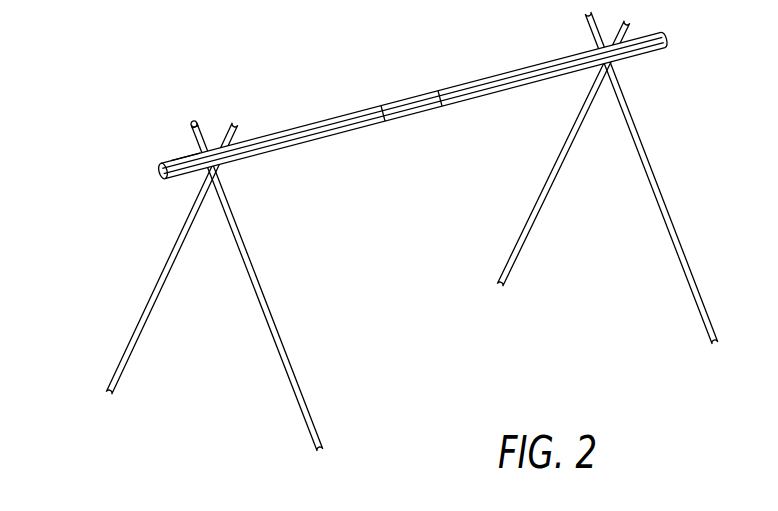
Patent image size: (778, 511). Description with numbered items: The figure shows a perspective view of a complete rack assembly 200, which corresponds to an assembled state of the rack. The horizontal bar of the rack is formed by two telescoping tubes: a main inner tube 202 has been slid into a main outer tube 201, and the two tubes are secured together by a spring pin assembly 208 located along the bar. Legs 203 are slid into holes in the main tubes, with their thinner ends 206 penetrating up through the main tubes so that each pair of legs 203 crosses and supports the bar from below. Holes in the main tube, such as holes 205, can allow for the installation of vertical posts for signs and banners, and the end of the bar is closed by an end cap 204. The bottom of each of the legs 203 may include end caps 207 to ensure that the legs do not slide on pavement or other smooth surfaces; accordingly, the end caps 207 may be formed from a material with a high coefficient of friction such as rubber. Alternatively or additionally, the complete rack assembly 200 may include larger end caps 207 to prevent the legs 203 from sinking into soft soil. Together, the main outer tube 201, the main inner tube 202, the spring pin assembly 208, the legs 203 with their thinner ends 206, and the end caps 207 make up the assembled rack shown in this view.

The complete rack assembly 200 is at (384, 231).
The main outer tube 201 is at (472, 80).
The main inner tube 202 is at (322, 115).
The legs 203 is at (277, 317).
The bar end cap 204 is at (153, 167).
The holes 205 is at (182, 157).
The thinner ends 206 is at (195, 128).
The end caps 207 is at (105, 390).
The spring pin assembly 208 is at (438, 100).